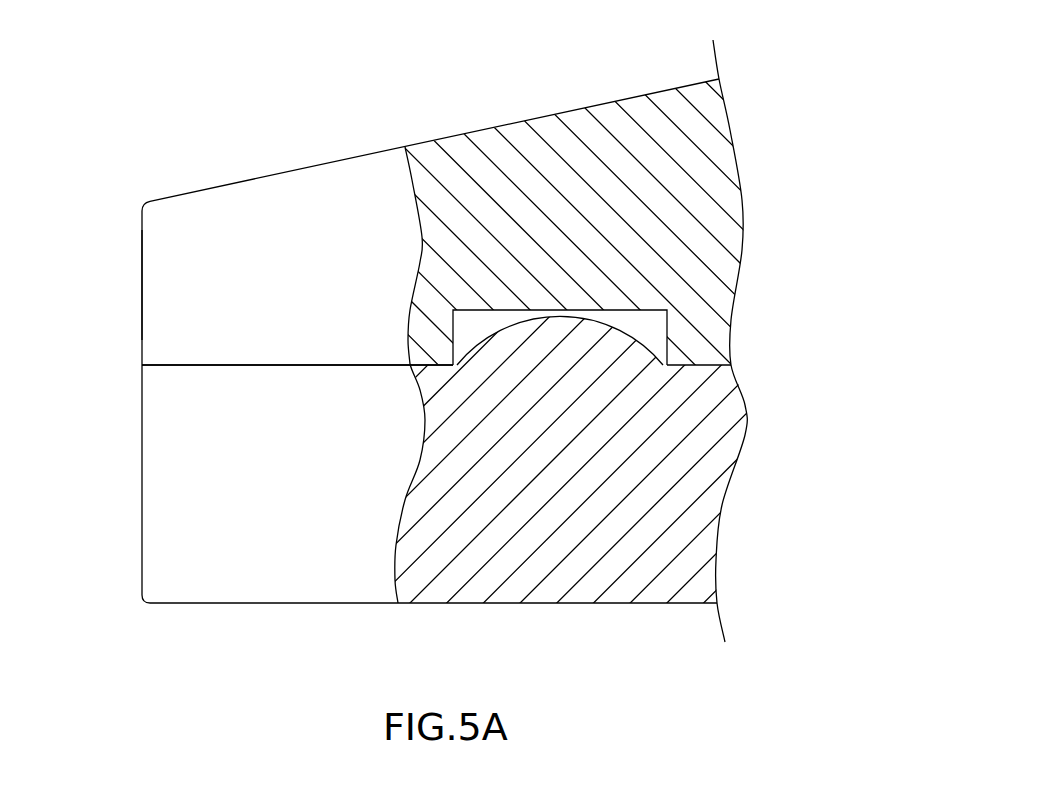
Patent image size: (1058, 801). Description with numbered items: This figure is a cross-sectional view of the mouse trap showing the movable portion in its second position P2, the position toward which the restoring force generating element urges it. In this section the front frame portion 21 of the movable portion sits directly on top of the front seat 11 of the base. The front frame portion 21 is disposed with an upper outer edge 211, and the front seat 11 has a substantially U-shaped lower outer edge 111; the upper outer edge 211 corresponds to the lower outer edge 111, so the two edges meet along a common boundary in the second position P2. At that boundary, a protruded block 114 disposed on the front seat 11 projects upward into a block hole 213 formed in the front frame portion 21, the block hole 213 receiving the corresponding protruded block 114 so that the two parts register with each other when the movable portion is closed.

The front frame portion 21 is at (195, 238).
The upper outer edge 211 is at (163, 365).
The block hole 213 is at (645, 310).
The front seat 11 is at (190, 523).
The lower outer edge 111 is at (238, 365).
The protruded block 114 is at (562, 333).
The second position P2 is at (141, 292).